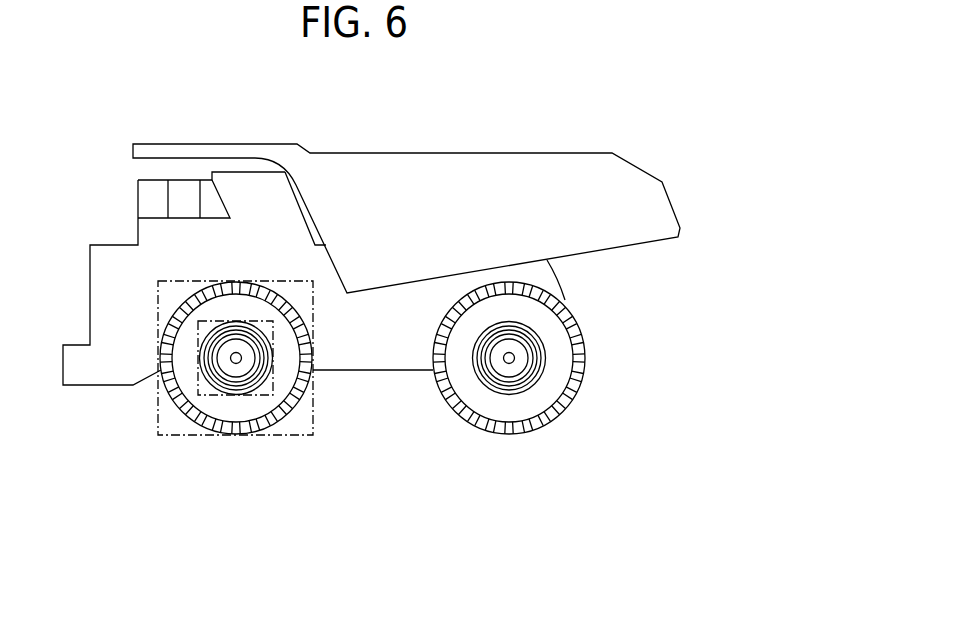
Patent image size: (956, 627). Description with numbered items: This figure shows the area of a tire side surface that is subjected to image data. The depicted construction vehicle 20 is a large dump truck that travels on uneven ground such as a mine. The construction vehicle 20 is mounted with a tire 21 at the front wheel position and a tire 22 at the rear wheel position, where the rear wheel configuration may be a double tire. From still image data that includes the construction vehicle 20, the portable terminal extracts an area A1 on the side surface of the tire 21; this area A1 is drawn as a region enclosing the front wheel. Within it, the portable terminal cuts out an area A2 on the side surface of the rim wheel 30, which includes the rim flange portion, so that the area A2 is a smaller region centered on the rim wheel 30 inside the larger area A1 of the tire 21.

The construction vehicle 20 is at (460, 167).
The tire 21 is at (245, 413).
The tire 22 is at (515, 413).
The rim wheel 30 is at (245, 363).
The area A1 is at (157, 411).
The area A2 is at (212, 397).